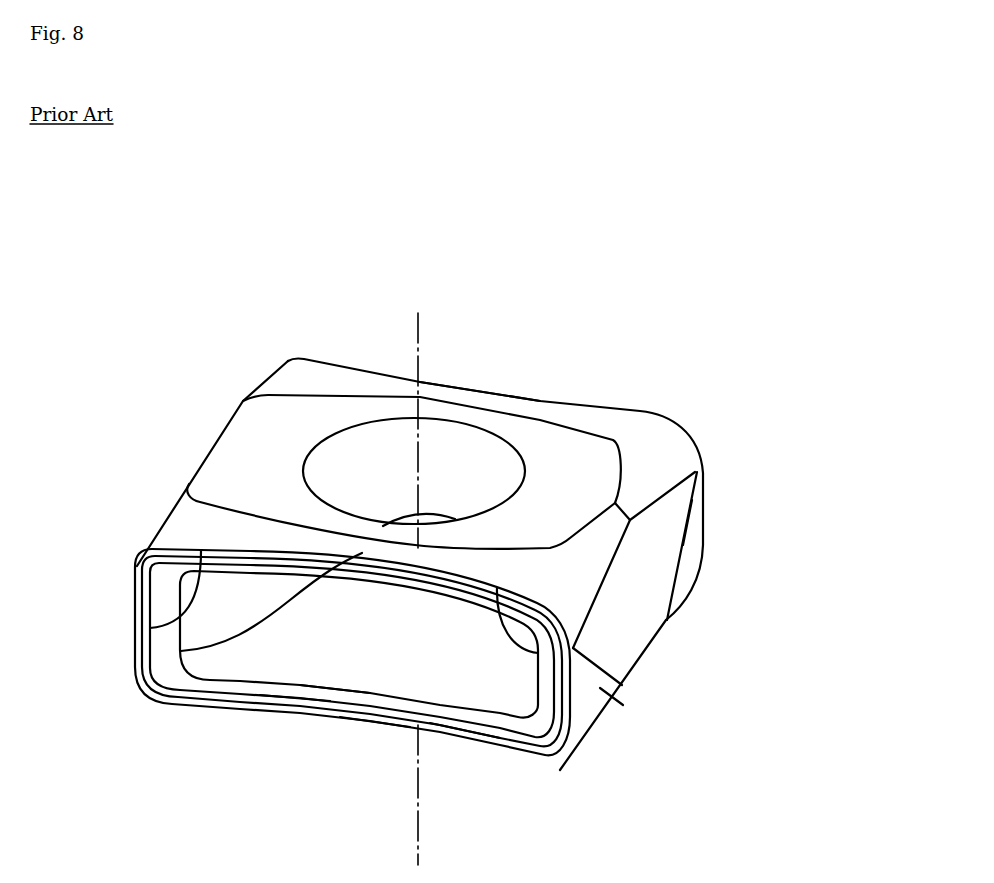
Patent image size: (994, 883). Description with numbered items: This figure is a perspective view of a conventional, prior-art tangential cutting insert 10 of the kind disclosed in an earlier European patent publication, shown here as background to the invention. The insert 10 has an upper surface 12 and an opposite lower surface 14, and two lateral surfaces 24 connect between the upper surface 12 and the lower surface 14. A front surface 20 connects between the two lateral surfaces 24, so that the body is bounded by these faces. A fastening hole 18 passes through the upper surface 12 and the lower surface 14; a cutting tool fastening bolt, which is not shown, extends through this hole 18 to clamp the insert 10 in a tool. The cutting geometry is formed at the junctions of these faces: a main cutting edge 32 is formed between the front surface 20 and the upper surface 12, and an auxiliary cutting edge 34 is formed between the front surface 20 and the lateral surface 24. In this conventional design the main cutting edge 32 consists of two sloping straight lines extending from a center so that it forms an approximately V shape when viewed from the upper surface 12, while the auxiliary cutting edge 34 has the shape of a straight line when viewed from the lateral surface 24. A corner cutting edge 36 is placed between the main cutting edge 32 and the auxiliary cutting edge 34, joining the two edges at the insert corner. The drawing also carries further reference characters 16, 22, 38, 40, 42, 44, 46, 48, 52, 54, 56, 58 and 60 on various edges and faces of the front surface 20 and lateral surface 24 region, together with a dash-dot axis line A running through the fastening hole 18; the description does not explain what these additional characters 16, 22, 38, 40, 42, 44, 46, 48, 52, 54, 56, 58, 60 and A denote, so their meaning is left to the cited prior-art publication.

The tangential cutting insert 10 is at (530, 258).
The upper surface 12 is at (250, 420).
The lower surface 14 is at (510, 768).
The front face 16 is at (570, 572).
The fastening hole 18 is at (377, 455).
The front surface 20 is at (262, 665).
The top edge land 22 is at (519, 386).
The lateral surface 24 is at (147, 513).
The main cutting edge 32 is at (181, 543).
The auxiliary cutting edge 34 is at (133, 590).
The corner cutting edge 36 is at (133, 557).
The inner groove line 38 is at (293, 692).
The groove wall 40 is at (333, 678).
The curved transition 42 is at (163, 625).
The ridge line 44 is at (170, 652).
The rake face lower edge 46 is at (216, 530).
The land inner edge 48 is at (234, 452).
The outer groove line 52 is at (377, 722).
The lower rim 54 is at (460, 730).
The corner facet 56 is at (683, 568).
The lower facet edge 58 is at (573, 712).
The side facet 60 is at (660, 567).
The axis A is at (418, 343).